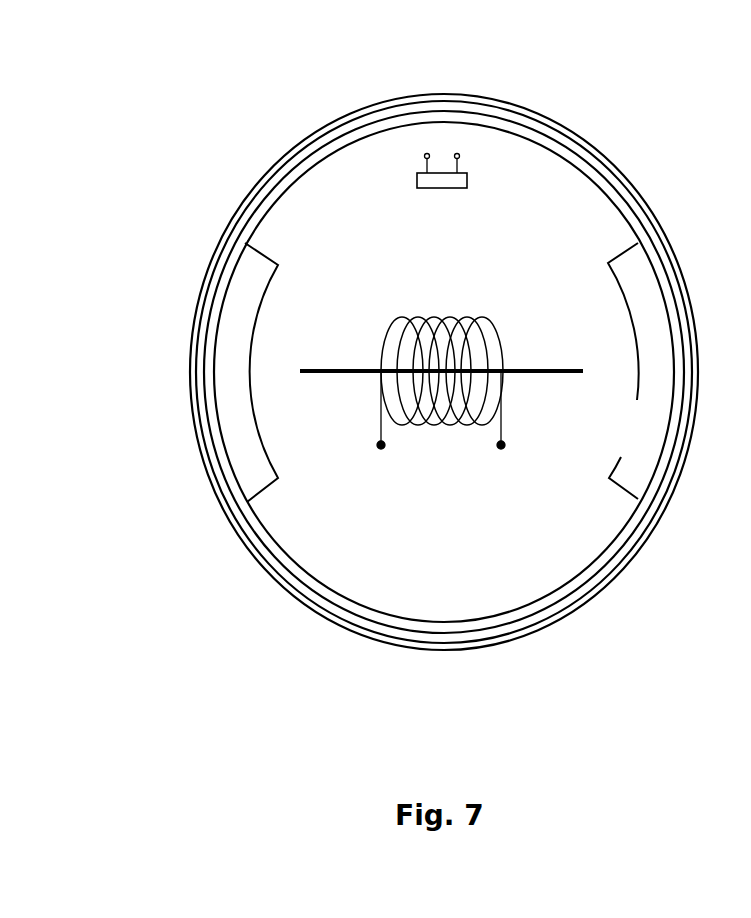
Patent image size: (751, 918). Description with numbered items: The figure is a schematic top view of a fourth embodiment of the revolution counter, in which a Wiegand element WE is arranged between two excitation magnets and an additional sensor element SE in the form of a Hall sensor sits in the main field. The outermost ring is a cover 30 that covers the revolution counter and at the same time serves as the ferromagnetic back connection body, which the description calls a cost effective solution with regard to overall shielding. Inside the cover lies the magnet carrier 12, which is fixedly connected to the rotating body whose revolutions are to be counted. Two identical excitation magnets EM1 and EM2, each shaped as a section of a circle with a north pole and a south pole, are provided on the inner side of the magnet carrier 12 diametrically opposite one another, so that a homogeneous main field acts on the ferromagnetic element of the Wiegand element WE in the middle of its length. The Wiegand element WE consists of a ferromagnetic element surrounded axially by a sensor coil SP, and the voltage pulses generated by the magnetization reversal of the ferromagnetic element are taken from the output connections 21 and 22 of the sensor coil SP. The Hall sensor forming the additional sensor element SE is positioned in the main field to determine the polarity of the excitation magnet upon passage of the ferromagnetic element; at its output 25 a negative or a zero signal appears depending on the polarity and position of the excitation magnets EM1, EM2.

The cover 30 is at (326, 126).
The magnet carrier 12 is at (602, 183).
The output 25 is at (481, 115).
The additional sensor element SE is at (442, 180).
The excitation magnet EM1 is at (238, 305).
The excitation magnet EM2 is at (669, 375).
The sensor coil SP is at (621, 400).
The Wiegand element WE is at (525, 430).
The output connection 21 is at (382, 427).
The output connection 22 is at (502, 427).